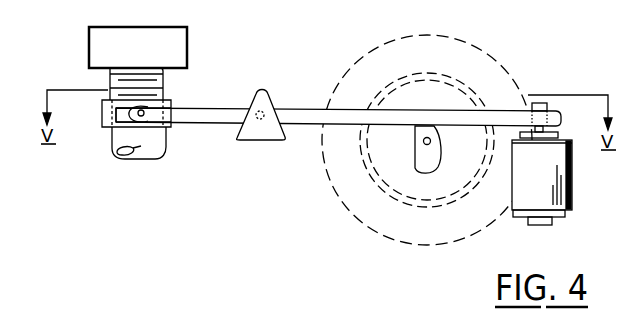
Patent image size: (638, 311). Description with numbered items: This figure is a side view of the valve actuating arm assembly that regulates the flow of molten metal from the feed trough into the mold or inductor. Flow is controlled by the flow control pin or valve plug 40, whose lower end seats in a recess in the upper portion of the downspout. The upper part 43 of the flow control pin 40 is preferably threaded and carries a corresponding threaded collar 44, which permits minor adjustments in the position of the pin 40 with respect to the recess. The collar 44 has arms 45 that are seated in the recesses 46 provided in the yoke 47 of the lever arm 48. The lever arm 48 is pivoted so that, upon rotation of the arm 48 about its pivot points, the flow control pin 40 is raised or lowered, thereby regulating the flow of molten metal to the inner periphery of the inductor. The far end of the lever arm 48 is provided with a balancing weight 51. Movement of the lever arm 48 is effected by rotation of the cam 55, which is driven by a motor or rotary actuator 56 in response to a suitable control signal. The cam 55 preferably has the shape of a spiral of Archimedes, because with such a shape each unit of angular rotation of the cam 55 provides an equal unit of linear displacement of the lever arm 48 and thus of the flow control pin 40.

The flow control pin 40 is at (166, 140).
The upper part 43 is at (163, 83).
The threaded collar 44 is at (102, 117).
The arms 45 is at (148, 103).
The recesses 46 is at (139, 116).
The yoke 47 is at (190, 119).
The lever arm 48 is at (295, 107).
The balancing weight 51 is at (569, 200).
The cam 55 is at (432, 150).
The rotary actuator 56 is at (496, 57).